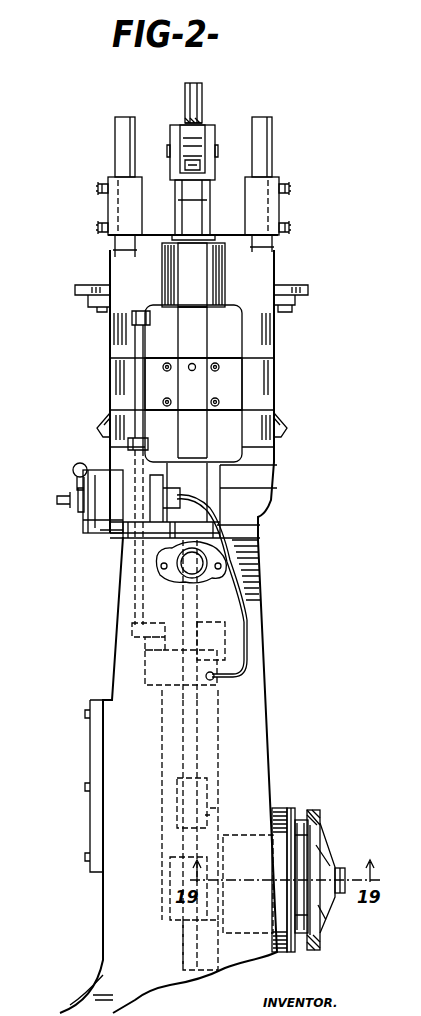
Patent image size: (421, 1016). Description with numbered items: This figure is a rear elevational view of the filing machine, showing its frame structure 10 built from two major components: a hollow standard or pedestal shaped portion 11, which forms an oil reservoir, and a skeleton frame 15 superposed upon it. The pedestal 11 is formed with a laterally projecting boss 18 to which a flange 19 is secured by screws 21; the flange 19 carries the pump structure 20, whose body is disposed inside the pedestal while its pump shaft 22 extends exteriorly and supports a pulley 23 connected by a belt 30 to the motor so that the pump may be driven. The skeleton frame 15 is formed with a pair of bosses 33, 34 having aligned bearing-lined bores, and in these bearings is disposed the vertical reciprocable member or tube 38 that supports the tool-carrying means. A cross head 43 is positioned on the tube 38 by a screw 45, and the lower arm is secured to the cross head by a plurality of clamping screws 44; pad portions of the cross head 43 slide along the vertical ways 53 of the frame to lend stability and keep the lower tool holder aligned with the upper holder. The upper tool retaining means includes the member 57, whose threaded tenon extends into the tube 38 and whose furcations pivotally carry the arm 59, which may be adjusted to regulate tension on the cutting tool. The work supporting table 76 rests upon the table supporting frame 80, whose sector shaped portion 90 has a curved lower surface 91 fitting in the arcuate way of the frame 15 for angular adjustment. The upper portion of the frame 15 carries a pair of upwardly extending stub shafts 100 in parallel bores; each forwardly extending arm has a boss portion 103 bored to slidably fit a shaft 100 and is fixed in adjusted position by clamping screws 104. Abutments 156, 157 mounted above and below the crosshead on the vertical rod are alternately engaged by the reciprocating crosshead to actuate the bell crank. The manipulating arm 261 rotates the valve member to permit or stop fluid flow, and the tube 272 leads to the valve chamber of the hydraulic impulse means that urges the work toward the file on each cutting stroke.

The frame structure 10 is at (270, 708).
The pedestal shaped portion 11 is at (272, 760).
The skeleton frame 15 is at (278, 466).
The boss 18 is at (280, 808).
The flange 19 is at (292, 808).
The pump structure 20 is at (248, 822).
The screws 21 is at (306, 815).
The pump shaft 22 is at (340, 866).
The pulley 23 is at (322, 938).
The belt 30 is at (310, 950).
The boss 33 is at (262, 500).
The boss 34 is at (225, 283).
The vertical reciprocable member 38 is at (242, 338).
The cross head 43 is at (230, 370).
The clamping screws 44 is at (219, 403).
The screw 45 is at (190, 365).
The ways 53 is at (110, 342).
The member 57 is at (215, 172).
The arm 59 is at (206, 125).
The work supporting table 76 is at (90, 285).
The table supporting frame 80 is at (283, 420).
The sector shaped portion 90 is at (282, 433).
The curved lower surface 91 is at (128, 441).
The stub shafts 100 is at (115, 150).
The boss portion 103 is at (108, 180).
The clamping screws 104 is at (98, 226).
The abutment 156 is at (128, 448).
The abutment 157 is at (132, 318).
The manipulating arm 261 is at (74, 472).
The tube 272 is at (252, 607).